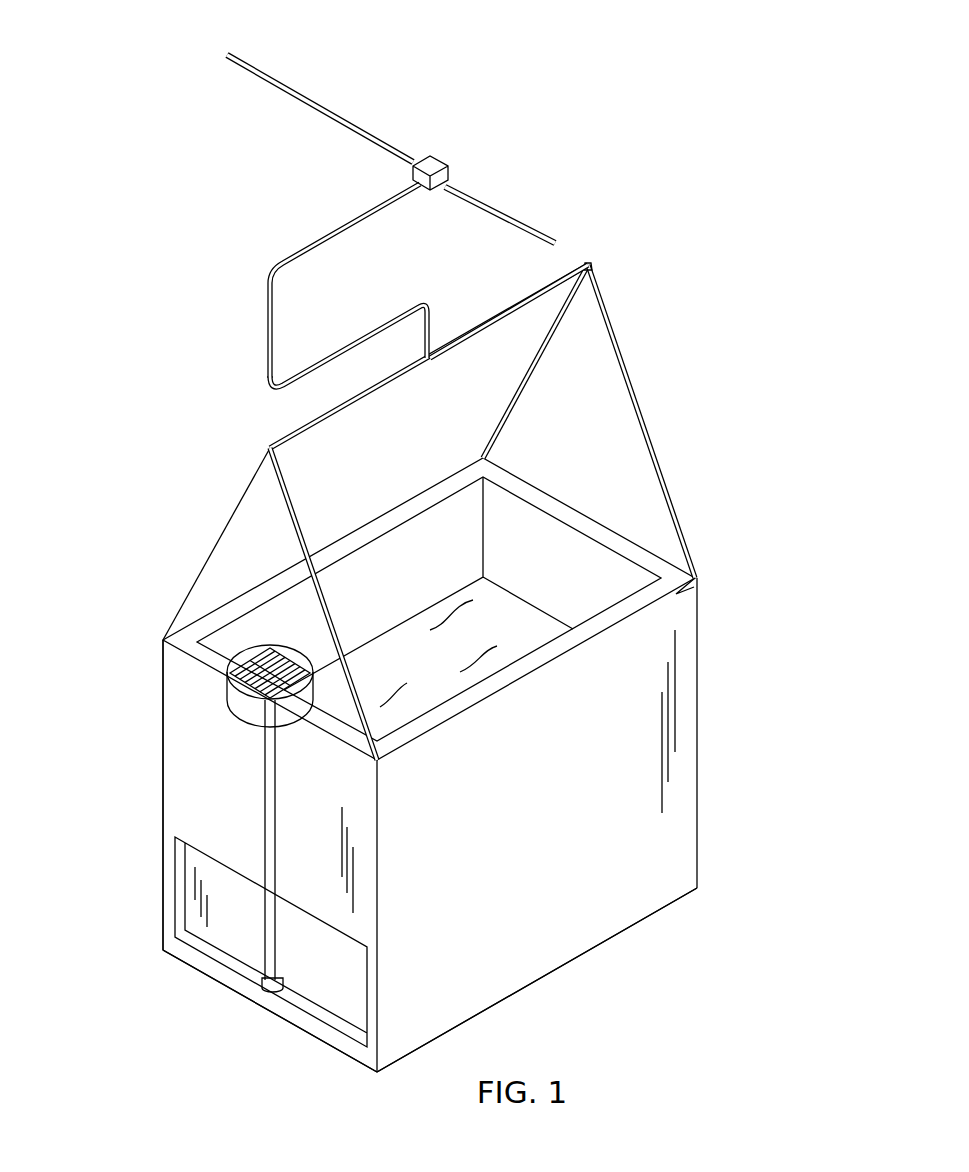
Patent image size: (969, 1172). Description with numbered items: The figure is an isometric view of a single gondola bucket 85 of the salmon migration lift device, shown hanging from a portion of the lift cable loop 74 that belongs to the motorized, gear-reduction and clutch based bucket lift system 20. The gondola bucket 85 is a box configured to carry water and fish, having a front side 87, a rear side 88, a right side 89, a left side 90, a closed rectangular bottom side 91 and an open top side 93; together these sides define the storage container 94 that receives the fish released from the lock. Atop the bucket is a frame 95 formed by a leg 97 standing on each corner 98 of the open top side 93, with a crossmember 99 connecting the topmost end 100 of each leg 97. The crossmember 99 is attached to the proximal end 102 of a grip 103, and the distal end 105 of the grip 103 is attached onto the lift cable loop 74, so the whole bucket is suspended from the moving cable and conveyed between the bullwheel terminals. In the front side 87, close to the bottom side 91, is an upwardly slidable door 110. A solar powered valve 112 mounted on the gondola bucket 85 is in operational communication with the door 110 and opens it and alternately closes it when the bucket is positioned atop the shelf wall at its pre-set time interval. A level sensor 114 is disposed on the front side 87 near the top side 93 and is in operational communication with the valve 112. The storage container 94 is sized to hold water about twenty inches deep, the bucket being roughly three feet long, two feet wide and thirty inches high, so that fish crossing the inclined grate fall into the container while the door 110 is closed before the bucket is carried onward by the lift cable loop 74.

The bucket lift system 20 is at (383, 140).
The lift cable loop 74 is at (497, 208).
The gondola bucket 85 is at (722, 181).
The front side 87 is at (163, 815).
The rear side 88 is at (697, 685).
The right side 89 is at (607, 918).
The left side 90 is at (163, 787).
The closed rectangular bottom side 91 is at (567, 962).
The open top side 93 is at (607, 630).
The storage container 94 is at (553, 546).
The frame 95 is at (657, 448).
The leg 97 is at (677, 522).
The corner 98 is at (676, 593).
The crossmember 99 is at (493, 316).
The topmost end 100 is at (593, 268).
The proximal end 102 is at (377, 330).
The grip 103 is at (268, 320).
The distal end 105 is at (413, 172).
The upwardly slidable door 110 is at (313, 987).
The solar powered valve 112 is at (263, 897).
The level sensor 114 is at (228, 697).